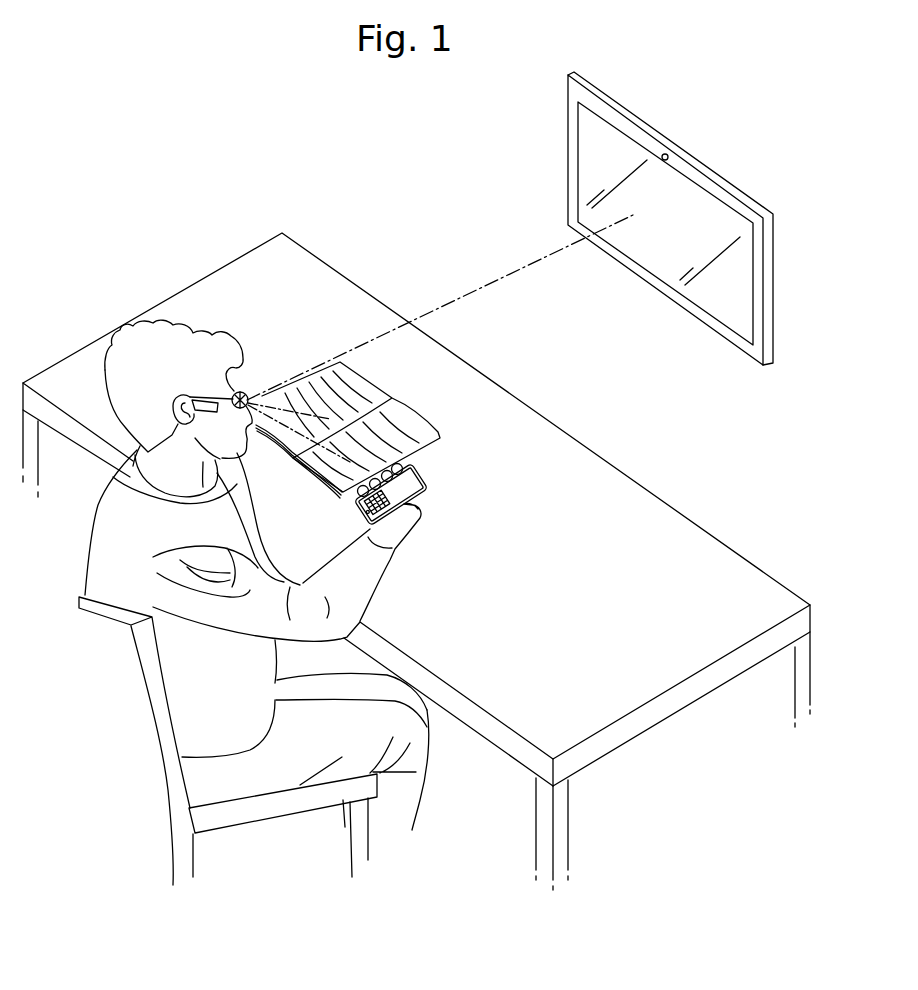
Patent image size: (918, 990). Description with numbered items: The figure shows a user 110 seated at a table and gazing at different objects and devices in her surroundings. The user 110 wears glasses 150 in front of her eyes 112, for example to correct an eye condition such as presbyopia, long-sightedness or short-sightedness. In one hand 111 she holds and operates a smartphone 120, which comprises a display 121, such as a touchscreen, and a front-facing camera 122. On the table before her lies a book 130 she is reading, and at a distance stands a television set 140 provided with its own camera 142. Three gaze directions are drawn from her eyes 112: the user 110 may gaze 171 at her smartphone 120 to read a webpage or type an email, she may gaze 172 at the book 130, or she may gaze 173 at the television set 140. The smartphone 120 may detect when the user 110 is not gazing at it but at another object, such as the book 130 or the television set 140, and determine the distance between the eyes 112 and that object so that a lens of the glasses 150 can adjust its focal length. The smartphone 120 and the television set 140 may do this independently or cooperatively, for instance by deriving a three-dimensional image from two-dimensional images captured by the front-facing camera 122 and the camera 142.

The user 110 is at (133, 540).
The hand 111 is at (410, 532).
The eyes 112 is at (239, 391).
The smartphone 120 is at (430, 486).
The display 121 is at (403, 494).
The front-facing camera 122 is at (427, 468).
The book 130 is at (413, 408).
The television set 140 is at (568, 118).
The camera 142 is at (669, 156).
The glasses 150 is at (233, 393).
The gaze 171 is at (330, 452).
The gaze 172 is at (291, 410).
The gaze 173 is at (488, 283).